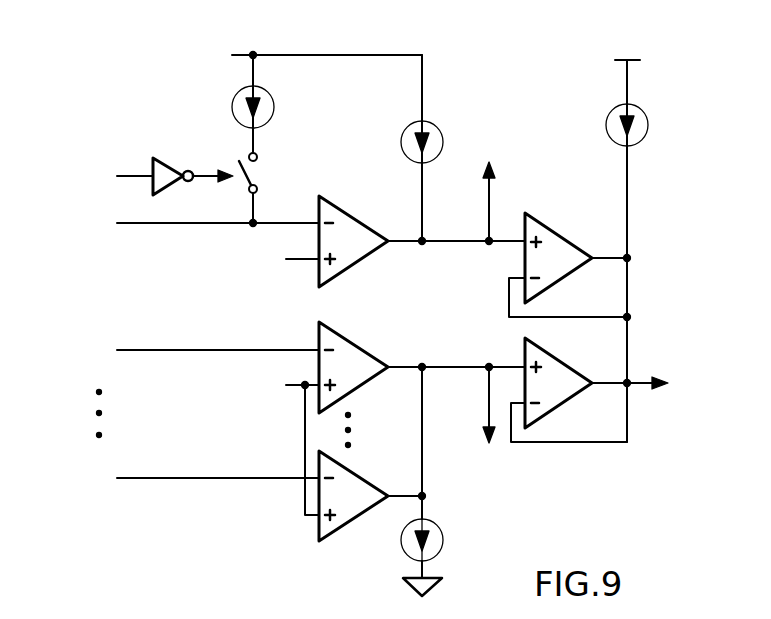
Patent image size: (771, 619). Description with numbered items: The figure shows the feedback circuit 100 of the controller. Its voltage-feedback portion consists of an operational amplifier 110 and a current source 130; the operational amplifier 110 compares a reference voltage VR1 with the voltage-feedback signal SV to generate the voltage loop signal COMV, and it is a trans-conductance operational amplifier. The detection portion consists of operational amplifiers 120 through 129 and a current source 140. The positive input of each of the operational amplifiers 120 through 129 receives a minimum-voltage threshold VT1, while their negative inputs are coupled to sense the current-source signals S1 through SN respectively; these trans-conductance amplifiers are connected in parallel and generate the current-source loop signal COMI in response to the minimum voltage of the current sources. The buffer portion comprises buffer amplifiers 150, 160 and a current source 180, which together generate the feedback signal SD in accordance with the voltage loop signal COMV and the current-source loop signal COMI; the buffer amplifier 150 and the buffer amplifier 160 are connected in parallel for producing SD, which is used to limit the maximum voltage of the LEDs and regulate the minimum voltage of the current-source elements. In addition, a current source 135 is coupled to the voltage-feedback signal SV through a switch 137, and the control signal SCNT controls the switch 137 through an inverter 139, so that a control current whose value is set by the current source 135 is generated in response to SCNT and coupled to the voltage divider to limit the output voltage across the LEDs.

The feedback circuit 100 is at (700, 36).
The operational amplifier 110 is at (360, 272).
The operational amplifier 120 is at (356, 346).
The operational amplifier 129 is at (345, 530).
The current source 130 is at (395, 128).
The current source 135 is at (226, 92).
The switch 137 is at (262, 173).
The inverter 139 is at (173, 160).
The current source 140 is at (451, 540).
The buffer amplifier 150 is at (542, 224).
The buffer amplifier 160 is at (542, 349).
The current source 180 is at (655, 118).